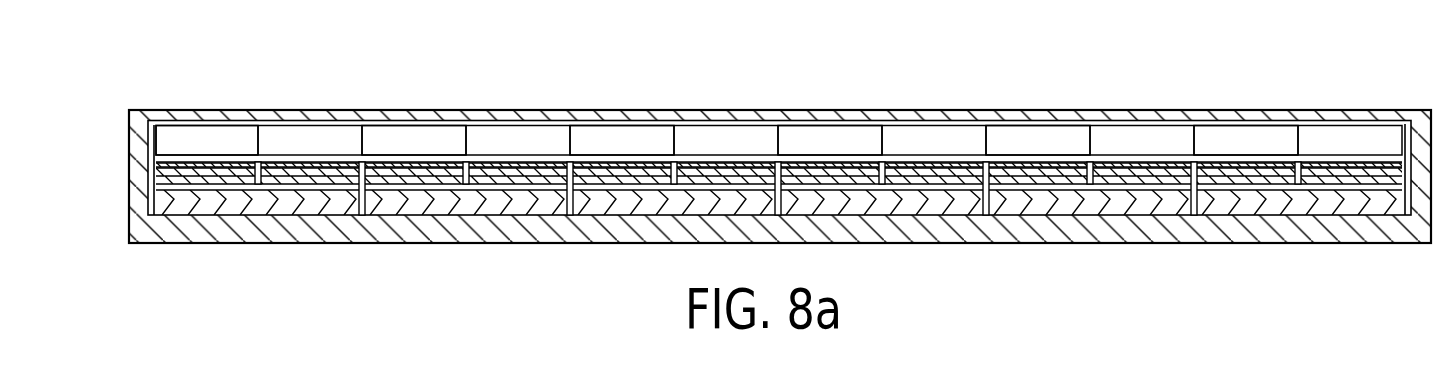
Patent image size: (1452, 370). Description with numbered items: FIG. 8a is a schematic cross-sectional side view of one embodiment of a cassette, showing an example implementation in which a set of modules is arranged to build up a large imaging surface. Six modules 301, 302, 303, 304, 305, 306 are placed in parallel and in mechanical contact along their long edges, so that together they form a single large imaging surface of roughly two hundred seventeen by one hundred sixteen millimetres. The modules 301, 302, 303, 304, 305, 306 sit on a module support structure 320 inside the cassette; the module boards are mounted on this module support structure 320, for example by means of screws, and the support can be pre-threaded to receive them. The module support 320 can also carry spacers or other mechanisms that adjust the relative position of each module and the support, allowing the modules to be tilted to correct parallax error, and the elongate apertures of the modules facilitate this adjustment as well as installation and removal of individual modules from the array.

The module 301 is at (216, 137).
The module 302 is at (397, 137).
The module 303 is at (602, 135).
The module 304 is at (827, 138).
The module 305 is at (1022, 135).
The module 306 is at (1230, 138).
The module support structure 320 is at (1299, 243).